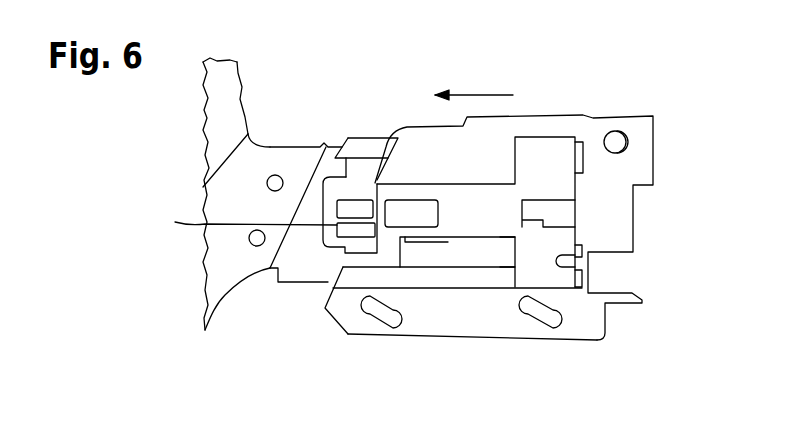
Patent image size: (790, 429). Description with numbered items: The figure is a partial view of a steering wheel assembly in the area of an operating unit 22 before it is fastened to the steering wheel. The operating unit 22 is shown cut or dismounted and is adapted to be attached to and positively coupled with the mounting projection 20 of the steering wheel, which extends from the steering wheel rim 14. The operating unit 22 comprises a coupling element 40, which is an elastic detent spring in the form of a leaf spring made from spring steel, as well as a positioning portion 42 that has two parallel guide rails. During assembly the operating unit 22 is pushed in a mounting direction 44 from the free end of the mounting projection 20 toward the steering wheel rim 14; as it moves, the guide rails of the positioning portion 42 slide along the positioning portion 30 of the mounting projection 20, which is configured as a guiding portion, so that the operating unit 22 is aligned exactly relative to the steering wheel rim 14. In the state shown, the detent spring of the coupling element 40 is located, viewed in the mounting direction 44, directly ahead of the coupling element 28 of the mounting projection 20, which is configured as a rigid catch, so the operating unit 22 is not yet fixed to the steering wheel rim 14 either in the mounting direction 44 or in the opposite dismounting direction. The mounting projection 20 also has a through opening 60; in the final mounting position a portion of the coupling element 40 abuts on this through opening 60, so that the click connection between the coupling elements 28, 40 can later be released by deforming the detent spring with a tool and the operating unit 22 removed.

The steering wheel rim 14 is at (222, 120).
The mounting projection 20 is at (298, 126).
The operating unit 22 is at (586, 98).
The coupling element 28 is at (362, 207).
The positioning portion 30 is at (380, 148).
The coupling element 40 is at (403, 241).
The positioning portion 42 is at (398, 118).
The mounting direction 44 is at (478, 95).
The through opening 60 is at (239, 223).